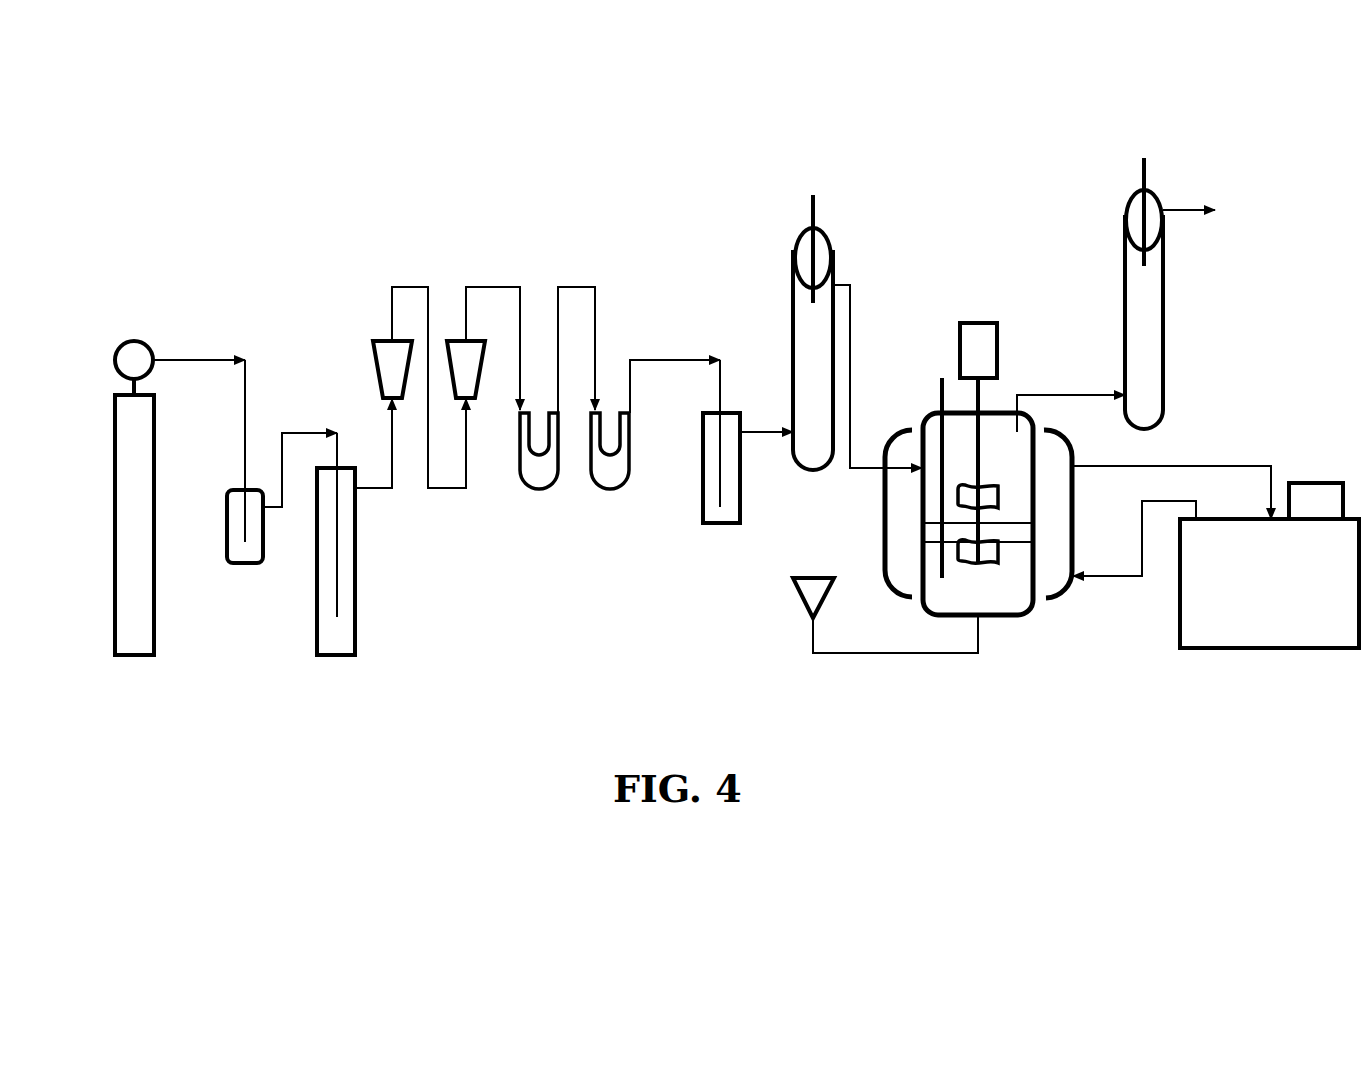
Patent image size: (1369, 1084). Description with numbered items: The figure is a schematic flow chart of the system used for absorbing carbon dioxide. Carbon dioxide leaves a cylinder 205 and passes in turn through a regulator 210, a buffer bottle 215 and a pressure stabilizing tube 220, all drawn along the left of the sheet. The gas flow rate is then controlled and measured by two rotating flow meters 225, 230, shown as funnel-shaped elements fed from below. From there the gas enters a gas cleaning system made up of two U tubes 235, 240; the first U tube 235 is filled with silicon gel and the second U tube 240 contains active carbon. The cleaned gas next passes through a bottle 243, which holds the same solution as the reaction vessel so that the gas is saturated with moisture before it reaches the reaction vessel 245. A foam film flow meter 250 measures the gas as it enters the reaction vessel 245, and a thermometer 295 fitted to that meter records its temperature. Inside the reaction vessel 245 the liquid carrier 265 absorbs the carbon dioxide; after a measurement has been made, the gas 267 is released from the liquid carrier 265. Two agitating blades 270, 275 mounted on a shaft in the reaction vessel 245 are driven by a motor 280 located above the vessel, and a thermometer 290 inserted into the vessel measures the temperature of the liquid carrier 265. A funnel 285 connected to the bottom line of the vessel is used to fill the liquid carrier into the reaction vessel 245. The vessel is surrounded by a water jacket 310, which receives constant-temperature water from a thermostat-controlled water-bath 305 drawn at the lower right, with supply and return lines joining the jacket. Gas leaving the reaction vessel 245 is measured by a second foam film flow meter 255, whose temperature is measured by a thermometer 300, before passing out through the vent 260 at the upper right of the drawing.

The cylinder 205 is at (113, 525).
The regulator 210 is at (180, 431).
The buffer bottle 215 is at (261, 525).
The pressure stabilizing tube 220 is at (334, 527).
The rotating flow meter 225 is at (405, 387).
The rotating flow meter 230 is at (484, 348).
The U tube 235 is at (540, 388).
The U tube 240 is at (639, 433).
The bottle 243 is at (726, 468).
The foam film flow meter 250 is at (838, 360).
The thermometer 295 is at (801, 249).
The liquid carrier 265 is at (942, 595).
The gas 267 is at (997, 450).
The motor 280 is at (979, 427).
The thermometer 290 is at (921, 477).
The agitating blade 270 is at (998, 503).
The agitating blade 275 is at (997, 562).
The funnel 285 is at (800, 600).
The reaction vessel 245 is at (920, 634).
The thermostat-controlled water-bath 305 is at (1215, 557).
The water jacket 310 is at (1053, 580).
The foam film flow meter 255 is at (1124, 322).
The thermometer 300 is at (1130, 212).
The vent outlet 260 is at (1229, 218).